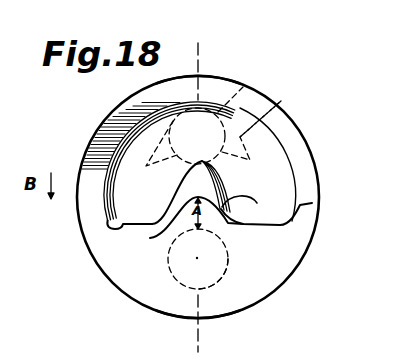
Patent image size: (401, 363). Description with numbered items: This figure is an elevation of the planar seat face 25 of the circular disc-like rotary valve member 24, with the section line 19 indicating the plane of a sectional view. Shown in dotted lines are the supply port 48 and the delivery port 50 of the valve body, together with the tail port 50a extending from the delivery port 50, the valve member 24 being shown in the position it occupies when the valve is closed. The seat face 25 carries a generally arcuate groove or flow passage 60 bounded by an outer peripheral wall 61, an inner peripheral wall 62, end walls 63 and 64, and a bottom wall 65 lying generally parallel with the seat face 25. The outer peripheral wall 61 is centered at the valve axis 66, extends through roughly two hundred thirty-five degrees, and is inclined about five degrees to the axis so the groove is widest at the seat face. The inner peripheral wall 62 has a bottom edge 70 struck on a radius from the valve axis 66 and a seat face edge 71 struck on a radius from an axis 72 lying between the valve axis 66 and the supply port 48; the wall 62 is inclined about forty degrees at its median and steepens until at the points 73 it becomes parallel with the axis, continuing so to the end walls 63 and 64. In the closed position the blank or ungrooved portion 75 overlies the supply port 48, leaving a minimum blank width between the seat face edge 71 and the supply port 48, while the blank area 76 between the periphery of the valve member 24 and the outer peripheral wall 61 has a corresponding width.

The section line 19 is at (178, 43).
The rotary valve member 24 is at (324, 164).
The planar seat face 25 is at (272, 256).
The supply port 48 is at (224, 269).
The delivery port 50 is at (248, 85).
The tail port 50a is at (282, 102).
The arcuate groove 60 is at (276, 184).
The outer peripheral wall 61 is at (268, 133).
The inner peripheral wall 62 is at (177, 190).
The end wall 63 is at (312, 203).
The end wall 64 is at (110, 223).
The bottom wall 65 is at (127, 158).
The valve axis 66 is at (152, 237).
The bottom edge 70 is at (233, 174).
The seat face edge 71 is at (234, 228).
The axis 72 is at (196, 243).
The points 73 is at (240, 199).
The blank portion 75 is at (165, 297).
The blank area 76 is at (213, 84).